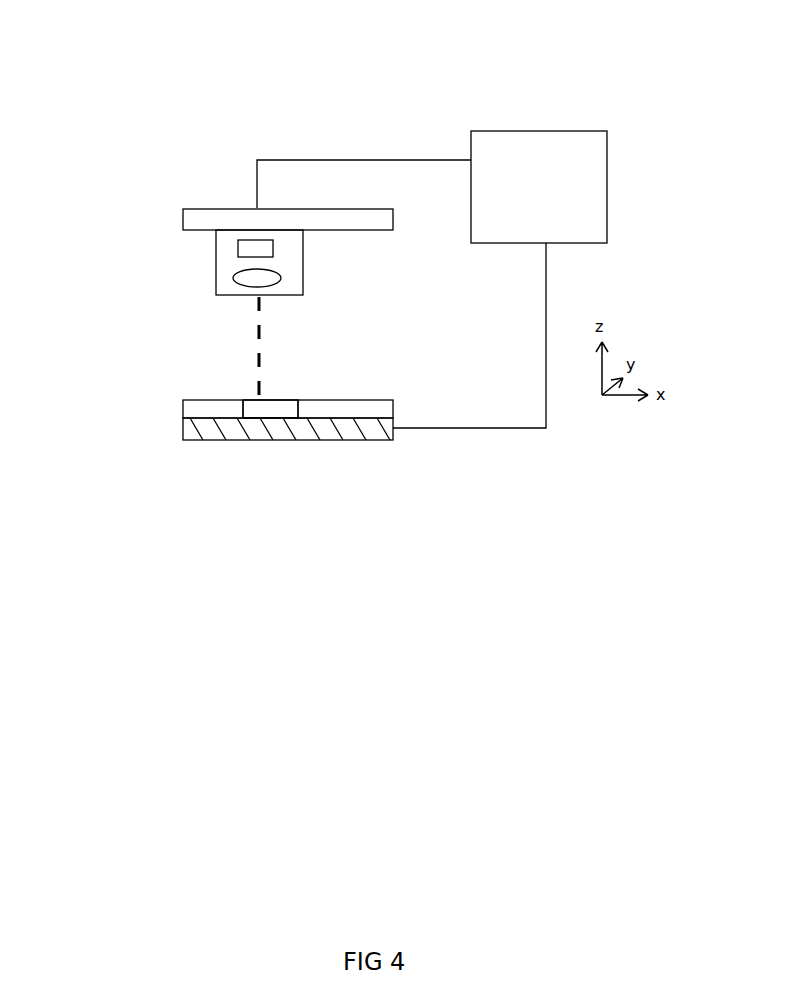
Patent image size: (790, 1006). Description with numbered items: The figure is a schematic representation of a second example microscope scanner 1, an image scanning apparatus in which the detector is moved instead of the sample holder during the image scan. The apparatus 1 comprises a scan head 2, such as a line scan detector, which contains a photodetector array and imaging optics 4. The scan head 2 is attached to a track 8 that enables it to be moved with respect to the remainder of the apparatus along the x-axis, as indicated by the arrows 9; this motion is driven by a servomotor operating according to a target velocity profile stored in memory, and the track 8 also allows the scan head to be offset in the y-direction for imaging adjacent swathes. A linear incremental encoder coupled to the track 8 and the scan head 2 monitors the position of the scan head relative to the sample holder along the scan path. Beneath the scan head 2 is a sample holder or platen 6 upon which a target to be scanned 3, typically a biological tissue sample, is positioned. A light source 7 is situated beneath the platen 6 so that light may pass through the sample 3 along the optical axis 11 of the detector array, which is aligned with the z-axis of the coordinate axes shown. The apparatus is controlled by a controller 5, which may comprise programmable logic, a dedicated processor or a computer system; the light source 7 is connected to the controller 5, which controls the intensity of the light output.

The microscope scanner 1 is at (222, 107).
The scan head 2 is at (216, 265).
The target to be scanned 3 is at (258, 411).
The imaging optics 4 is at (247, 278).
The controller 5 is at (553, 207).
The sample holder or platen 6 is at (370, 400).
The light source 7 is at (195, 442).
The track 8 is at (347, 209).
The arrows 9 is at (380, 256).
The optical axis 11 is at (247, 372).